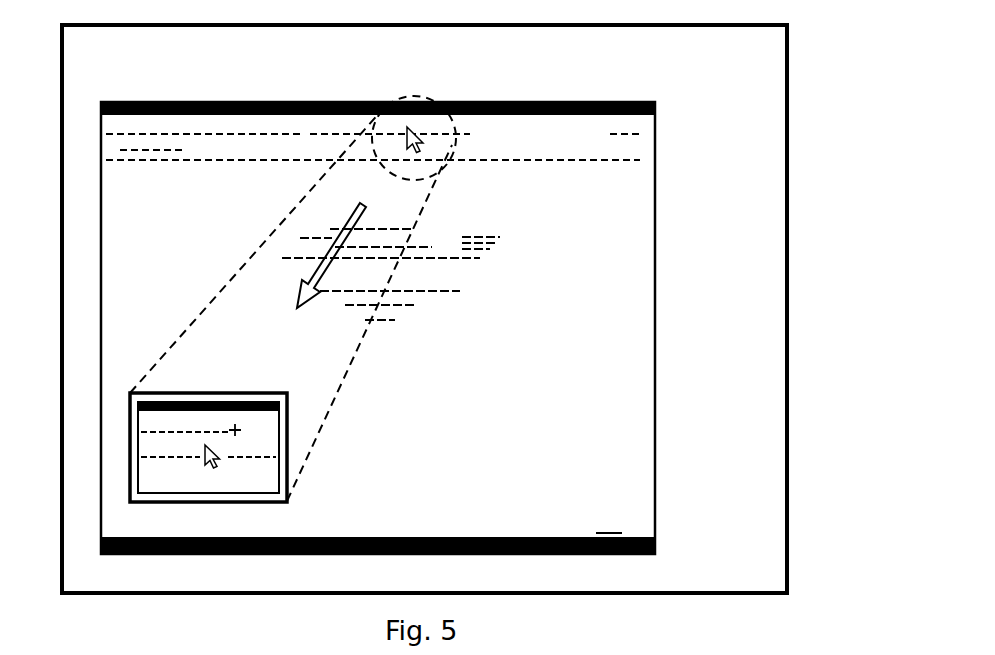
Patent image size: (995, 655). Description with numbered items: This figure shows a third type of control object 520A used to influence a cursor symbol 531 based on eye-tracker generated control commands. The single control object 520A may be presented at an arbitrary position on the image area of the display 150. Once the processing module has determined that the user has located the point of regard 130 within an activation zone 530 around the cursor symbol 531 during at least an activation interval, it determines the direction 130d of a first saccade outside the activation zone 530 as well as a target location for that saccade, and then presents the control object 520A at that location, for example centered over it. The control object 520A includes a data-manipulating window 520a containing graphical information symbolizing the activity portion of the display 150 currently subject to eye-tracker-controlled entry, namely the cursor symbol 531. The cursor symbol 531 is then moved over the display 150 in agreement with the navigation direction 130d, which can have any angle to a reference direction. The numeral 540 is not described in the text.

The display 150 is at (869, 44).
The display screen 540 is at (182, 101).
The activation zone 530 is at (422, 97).
The cursor symbol 531 is at (418, 135).
The first saccade direction 130d is at (298, 267).
The point of regard 130 is at (236, 429).
The data-manipulating window 520a is at (279, 435).
The control object 520A is at (288, 478).